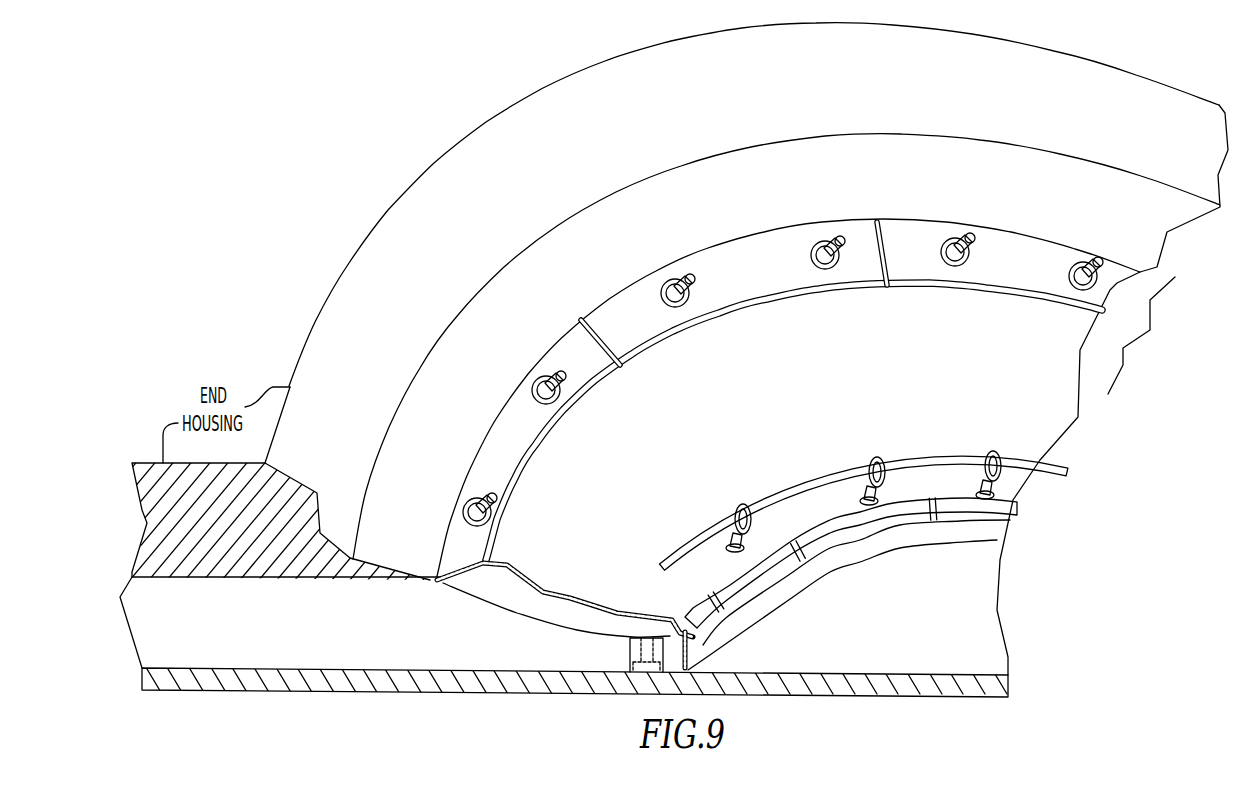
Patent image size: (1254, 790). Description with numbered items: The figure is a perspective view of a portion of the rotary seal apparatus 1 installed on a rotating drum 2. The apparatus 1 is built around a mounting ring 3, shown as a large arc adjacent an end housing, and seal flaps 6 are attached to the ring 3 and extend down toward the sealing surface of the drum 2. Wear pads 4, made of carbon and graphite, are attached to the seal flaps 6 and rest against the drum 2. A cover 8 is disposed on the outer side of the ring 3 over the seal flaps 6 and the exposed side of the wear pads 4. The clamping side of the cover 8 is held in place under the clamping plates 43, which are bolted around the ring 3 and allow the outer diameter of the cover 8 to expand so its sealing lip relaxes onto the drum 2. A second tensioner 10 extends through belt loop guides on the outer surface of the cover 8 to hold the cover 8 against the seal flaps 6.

The rotary seal apparatus 1 is at (1143, 338).
The rotating drum 2 is at (307, 626).
The mounting ring 3 is at (746, 349).
The wear pads 4 is at (630, 654).
The seal flaps 6 is at (520, 606).
The cover 8 is at (672, 430).
The second tensioner 10 is at (1018, 518).
The clamping plates 43 is at (742, 265).